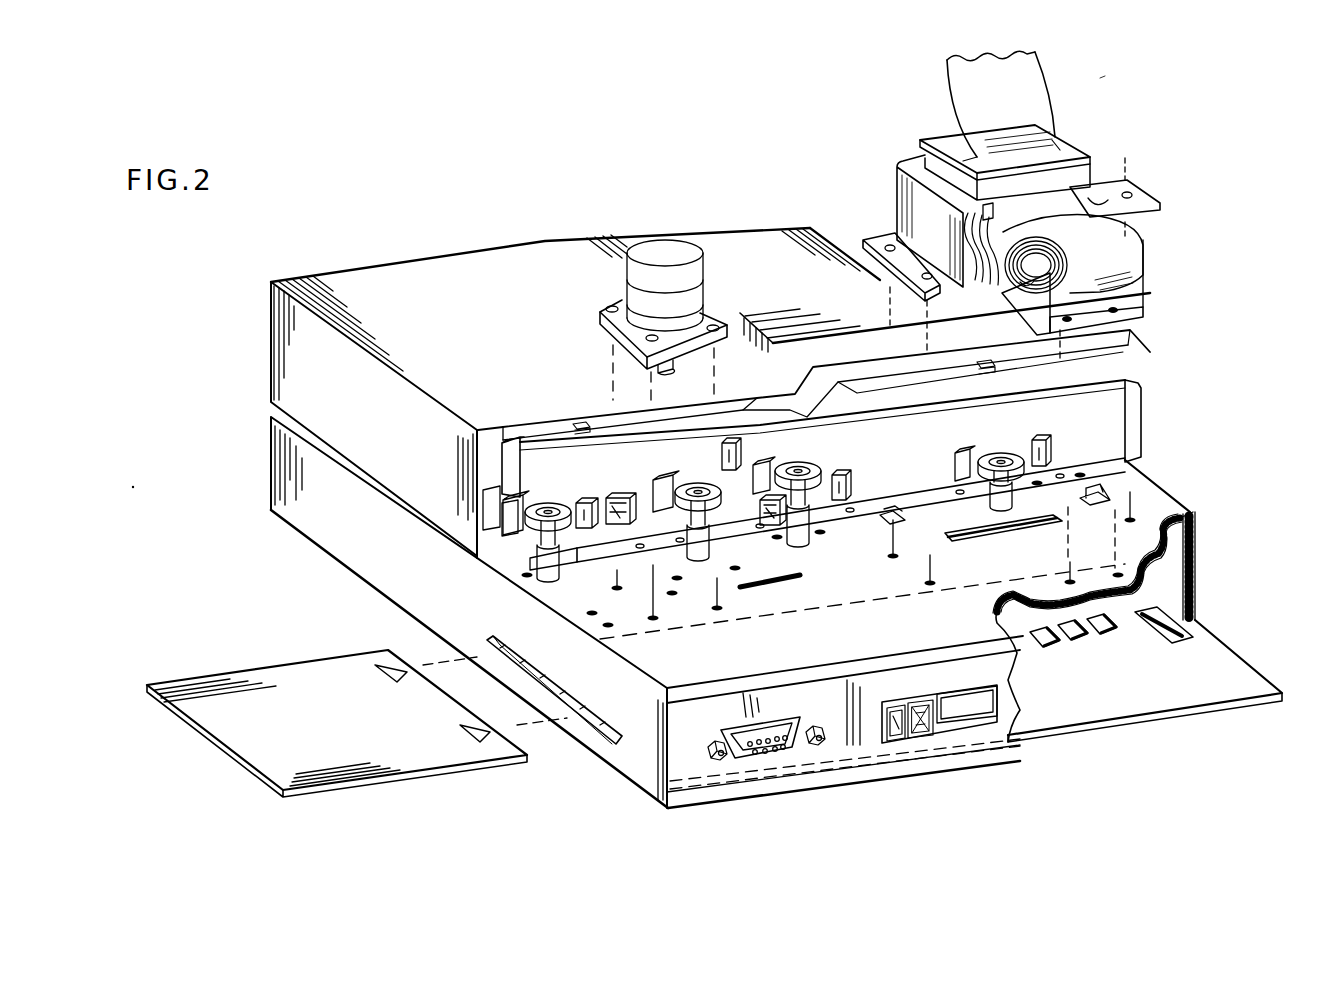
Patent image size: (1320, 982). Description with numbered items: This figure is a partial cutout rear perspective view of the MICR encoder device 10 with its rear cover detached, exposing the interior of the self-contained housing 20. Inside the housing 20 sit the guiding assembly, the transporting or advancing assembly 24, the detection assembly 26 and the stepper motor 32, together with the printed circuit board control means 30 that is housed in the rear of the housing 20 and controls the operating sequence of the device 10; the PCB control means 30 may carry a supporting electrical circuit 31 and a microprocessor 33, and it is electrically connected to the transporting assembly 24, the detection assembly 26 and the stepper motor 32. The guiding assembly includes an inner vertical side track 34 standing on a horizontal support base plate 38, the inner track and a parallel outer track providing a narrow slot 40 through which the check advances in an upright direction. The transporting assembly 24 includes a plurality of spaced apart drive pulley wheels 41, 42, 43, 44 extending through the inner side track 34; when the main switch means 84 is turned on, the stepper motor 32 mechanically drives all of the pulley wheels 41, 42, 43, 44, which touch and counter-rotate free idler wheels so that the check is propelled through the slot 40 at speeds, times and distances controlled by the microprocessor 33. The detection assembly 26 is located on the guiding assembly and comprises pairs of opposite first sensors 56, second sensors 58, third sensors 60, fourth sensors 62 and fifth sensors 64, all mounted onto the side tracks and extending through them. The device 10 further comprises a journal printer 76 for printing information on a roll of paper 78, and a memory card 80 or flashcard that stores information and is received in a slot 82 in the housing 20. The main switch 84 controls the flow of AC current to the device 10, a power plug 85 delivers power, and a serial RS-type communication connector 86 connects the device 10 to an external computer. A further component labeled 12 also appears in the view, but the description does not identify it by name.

The MICR encoder device 10 is at (1112, 72).
The housing 12 is at (360, 543).
The self-contained housing 20 is at (684, 812).
The transporting assembly 24 is at (570, 582).
The detection assembly 26 is at (1108, 445).
The printed circuit board control means 30 is at (1158, 728).
The supporting electrical circuit 31 is at (1086, 657).
The stepper motor 32 is at (657, 242).
The microprocessor 33 is at (1172, 635).
The inner vertical side track 34 is at (1110, 398).
The horizontal support base plate 38 is at (1168, 500).
The narrow slot 40 is at (860, 370).
The drive pulley wheel 41 is at (1002, 455).
The drive pulley wheel 42 is at (816, 463).
The drive pulley wheel 43 is at (700, 482).
The drive pulley wheel 44 is at (548, 505).
The first sensors 56 is at (1053, 450).
The second sensors 58 is at (880, 478).
The third sensors 60 is at (893, 459).
The fourth sensors 62 is at (740, 452).
The fifth sensors 64 is at (586, 498).
The journal printer 76 is at (1095, 158).
The roll of paper 78 is at (1125, 260).
The memory card 80 is at (432, 755).
The slot 82 is at (607, 742).
The main switch means 84 is at (888, 742).
The power plug 85 is at (993, 724).
The RS-232 communication connector 86 is at (780, 758).